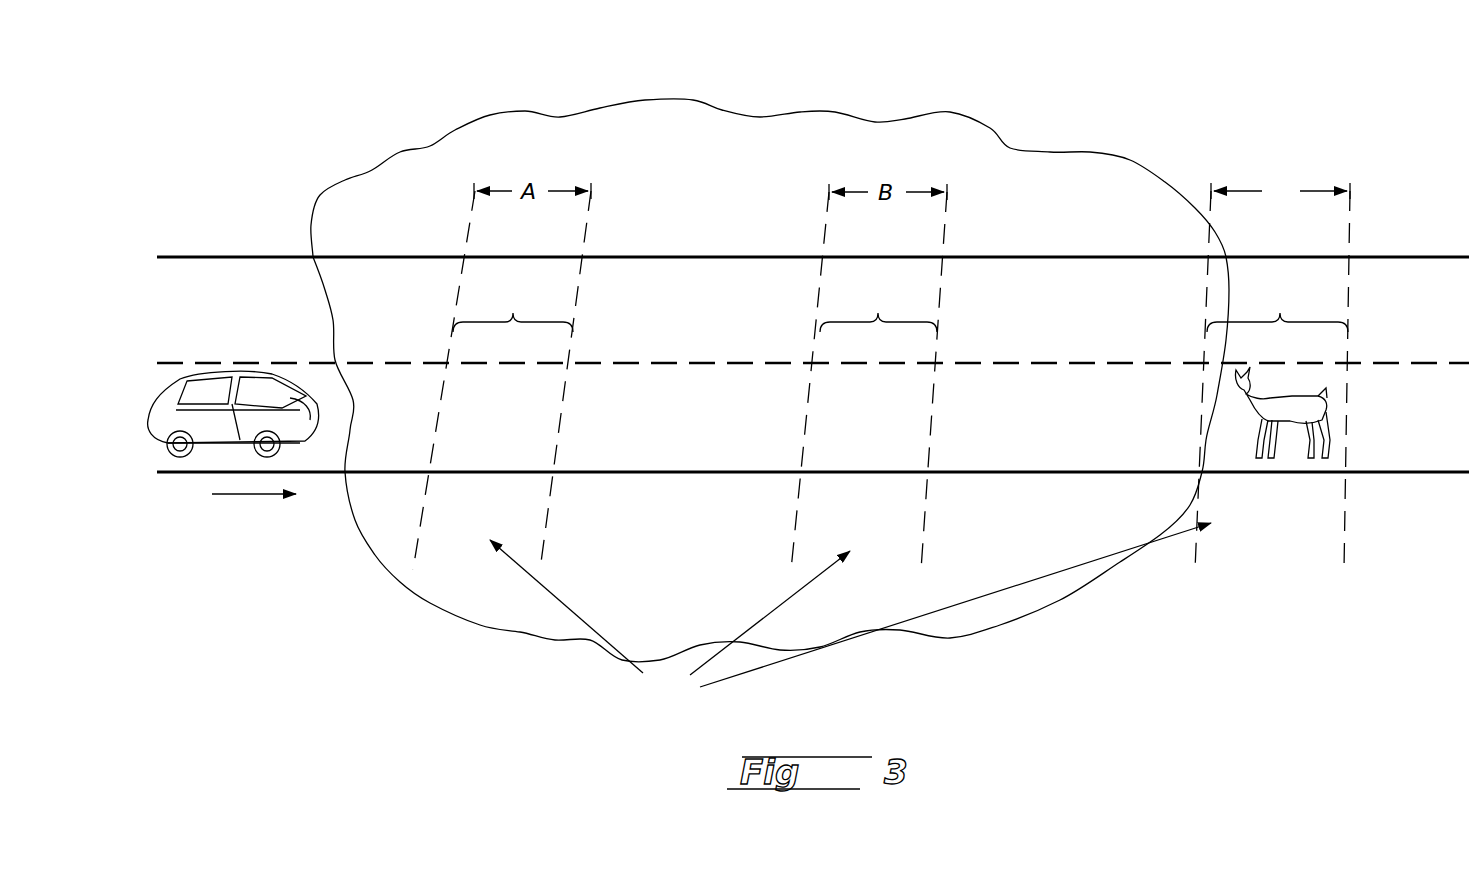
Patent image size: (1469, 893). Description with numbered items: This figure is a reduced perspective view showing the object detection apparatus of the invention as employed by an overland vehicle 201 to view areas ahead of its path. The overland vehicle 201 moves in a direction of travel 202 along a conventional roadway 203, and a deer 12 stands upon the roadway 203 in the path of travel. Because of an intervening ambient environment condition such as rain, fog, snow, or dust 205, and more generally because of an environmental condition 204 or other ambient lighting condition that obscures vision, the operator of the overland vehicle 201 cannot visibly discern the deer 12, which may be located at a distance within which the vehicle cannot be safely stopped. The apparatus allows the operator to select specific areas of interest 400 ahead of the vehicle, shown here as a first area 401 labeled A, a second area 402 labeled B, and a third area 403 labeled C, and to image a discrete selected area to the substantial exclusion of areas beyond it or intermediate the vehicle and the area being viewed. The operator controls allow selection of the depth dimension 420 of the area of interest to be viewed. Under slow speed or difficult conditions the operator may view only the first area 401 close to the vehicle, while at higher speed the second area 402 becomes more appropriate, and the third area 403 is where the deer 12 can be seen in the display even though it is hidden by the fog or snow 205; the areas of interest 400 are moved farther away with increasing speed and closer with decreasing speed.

The deer 12 is at (1285, 410).
The overland vehicle 201 is at (207, 383).
The direction of travel 202 is at (253, 495).
The roadway 203 is at (692, 452).
The environmental condition 204 is at (709, 145).
The intervening ambient environment condition 205 is at (1058, 529).
The areas of interest 400 is at (850, 618).
The first area 401 is at (513, 309).
The second area 402 is at (878, 309).
The third area 403 is at (1277, 309).
The depth dimension 420 is at (1243, 188).